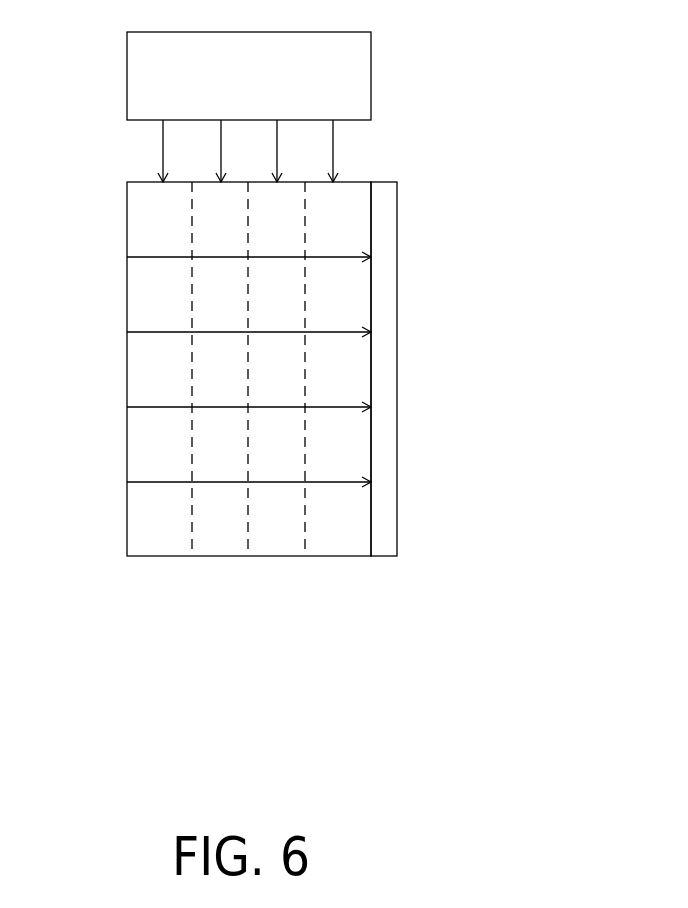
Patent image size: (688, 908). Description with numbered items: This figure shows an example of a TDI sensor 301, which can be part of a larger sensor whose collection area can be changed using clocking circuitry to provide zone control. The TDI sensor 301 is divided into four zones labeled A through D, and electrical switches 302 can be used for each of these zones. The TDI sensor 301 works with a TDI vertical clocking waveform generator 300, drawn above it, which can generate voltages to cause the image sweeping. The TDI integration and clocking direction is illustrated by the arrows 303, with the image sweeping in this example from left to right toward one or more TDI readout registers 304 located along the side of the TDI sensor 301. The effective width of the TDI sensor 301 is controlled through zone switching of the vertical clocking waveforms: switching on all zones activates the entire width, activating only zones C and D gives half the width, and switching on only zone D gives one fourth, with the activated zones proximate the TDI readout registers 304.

The TDI vertical clocking waveform generator 300 is at (249, 76).
The TDI sensor 301 is at (138, 181).
The electrical switches 302 is at (348, 176).
The arrows 303 is at (223, 368).
The TDI readout registers 304 is at (398, 295).